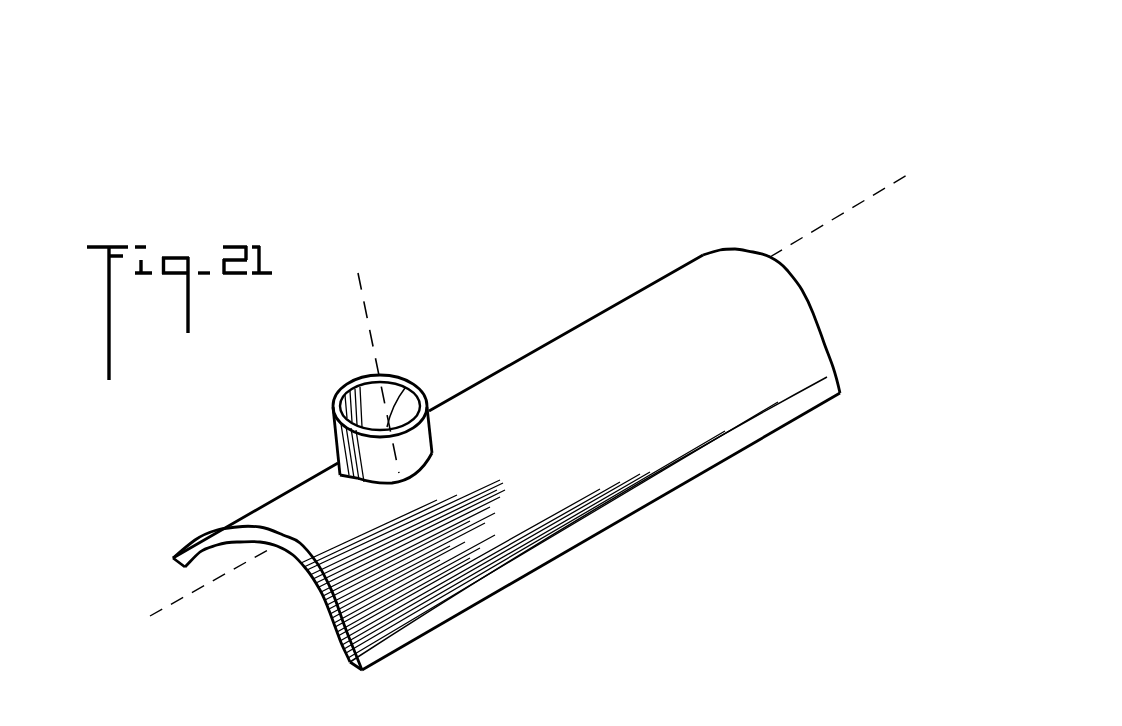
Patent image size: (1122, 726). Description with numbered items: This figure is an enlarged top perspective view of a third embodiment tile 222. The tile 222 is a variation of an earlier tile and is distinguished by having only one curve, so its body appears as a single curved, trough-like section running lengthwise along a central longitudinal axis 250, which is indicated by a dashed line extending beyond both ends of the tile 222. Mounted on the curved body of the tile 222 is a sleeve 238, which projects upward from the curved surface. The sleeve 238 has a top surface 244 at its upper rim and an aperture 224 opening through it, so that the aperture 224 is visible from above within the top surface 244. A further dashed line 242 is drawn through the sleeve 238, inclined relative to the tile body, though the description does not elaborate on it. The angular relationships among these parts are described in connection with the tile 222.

The tile 222 is at (652, 181).
The aperture 224 is at (399, 399).
The sleeve 238 is at (424, 441).
The collar axis 242 is at (372, 343).
The top surface 244 is at (348, 392).
The central longitudinal axis 250 is at (176, 603).